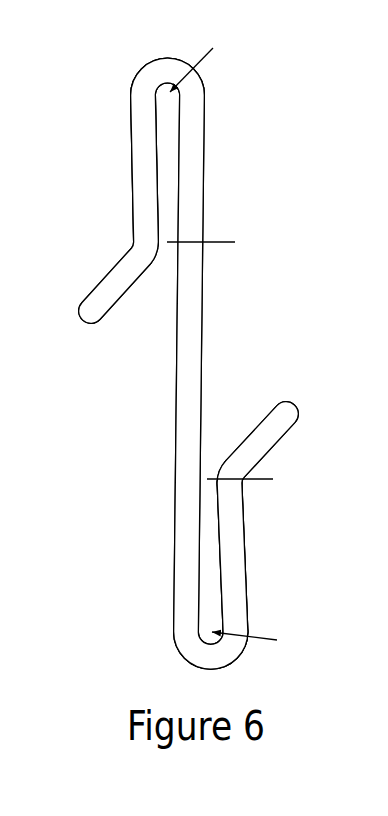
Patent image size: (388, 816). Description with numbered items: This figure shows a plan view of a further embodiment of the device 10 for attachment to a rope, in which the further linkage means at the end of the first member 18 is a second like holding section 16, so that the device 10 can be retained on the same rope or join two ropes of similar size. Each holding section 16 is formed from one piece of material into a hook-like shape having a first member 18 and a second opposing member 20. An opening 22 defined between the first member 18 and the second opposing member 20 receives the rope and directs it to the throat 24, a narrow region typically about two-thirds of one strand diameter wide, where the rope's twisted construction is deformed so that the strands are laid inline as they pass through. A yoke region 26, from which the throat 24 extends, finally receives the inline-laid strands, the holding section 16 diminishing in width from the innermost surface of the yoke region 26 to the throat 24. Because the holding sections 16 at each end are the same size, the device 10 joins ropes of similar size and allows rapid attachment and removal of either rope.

The device 10 is at (258, 147).
The holding section 16 is at (110, 120).
The first member 18 is at (203, 148).
The second opposing member 20 is at (132, 168).
The opening 22 is at (147, 338).
The throat 24 is at (167, 242).
The yoke region 26 is at (170, 92).